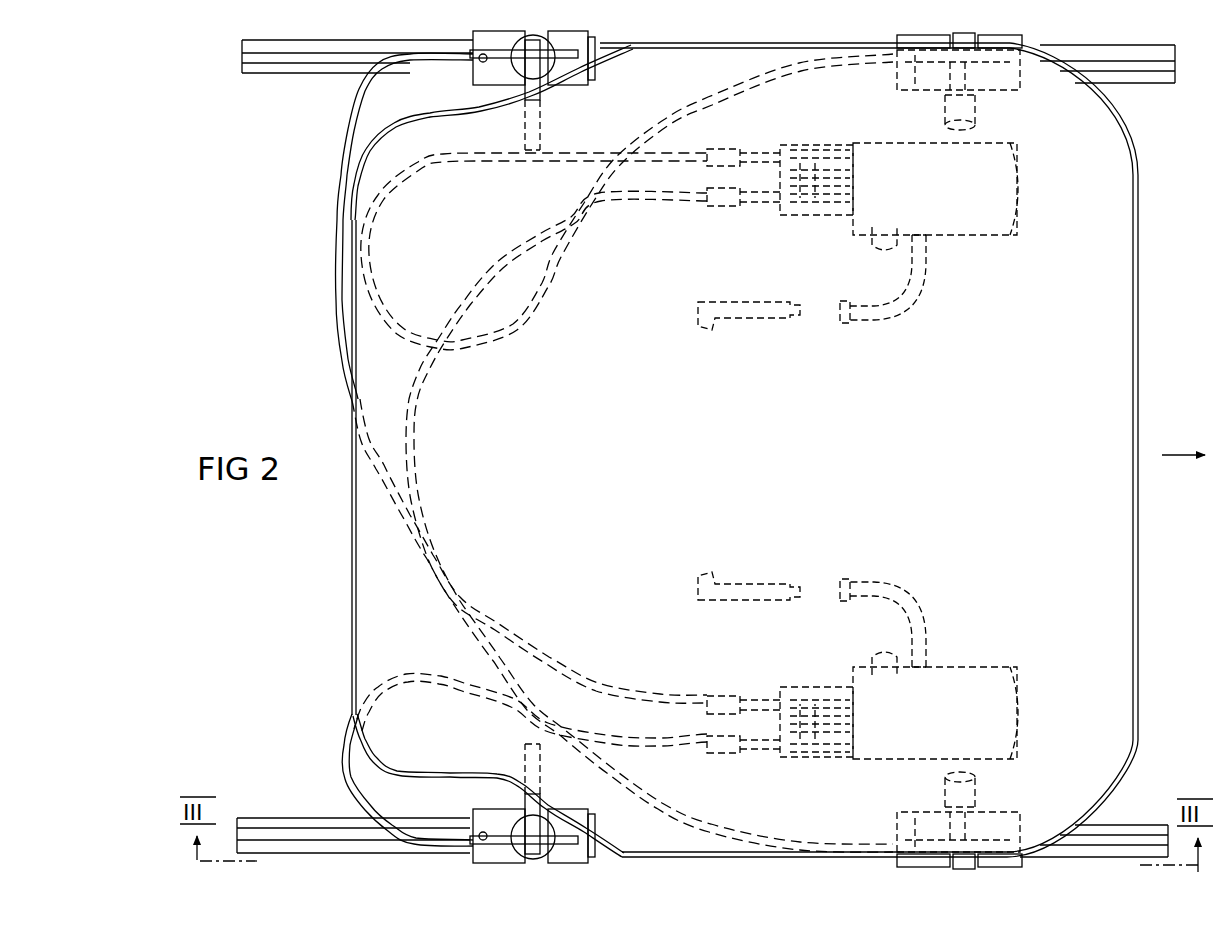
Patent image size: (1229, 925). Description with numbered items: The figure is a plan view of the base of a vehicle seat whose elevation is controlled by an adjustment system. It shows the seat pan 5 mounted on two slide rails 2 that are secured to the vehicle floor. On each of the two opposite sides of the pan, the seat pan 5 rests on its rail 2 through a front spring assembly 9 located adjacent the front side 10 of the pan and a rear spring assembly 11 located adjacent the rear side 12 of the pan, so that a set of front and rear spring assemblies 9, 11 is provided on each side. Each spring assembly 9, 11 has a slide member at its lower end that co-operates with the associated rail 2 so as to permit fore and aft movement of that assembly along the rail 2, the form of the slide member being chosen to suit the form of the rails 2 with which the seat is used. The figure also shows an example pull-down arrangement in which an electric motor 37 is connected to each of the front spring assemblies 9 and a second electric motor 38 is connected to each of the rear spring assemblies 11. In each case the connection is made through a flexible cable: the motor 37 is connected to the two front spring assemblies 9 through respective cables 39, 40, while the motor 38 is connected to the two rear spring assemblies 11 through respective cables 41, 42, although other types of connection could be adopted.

The slide rail 2 is at (305, 74).
The seat pan 5 is at (1090, 362).
The front spring assembly 9 is at (1043, 62).
The front side 10 is at (1140, 557).
The rear spring assembly 11 is at (492, 81).
The rear side 12 is at (351, 541).
The electric motor 37 is at (998, 166).
The electric motor 38 is at (1000, 690).
The cable 39 is at (712, 100).
The cable 40 is at (411, 390).
The cable 41 is at (331, 240).
The cable 42 is at (392, 676).